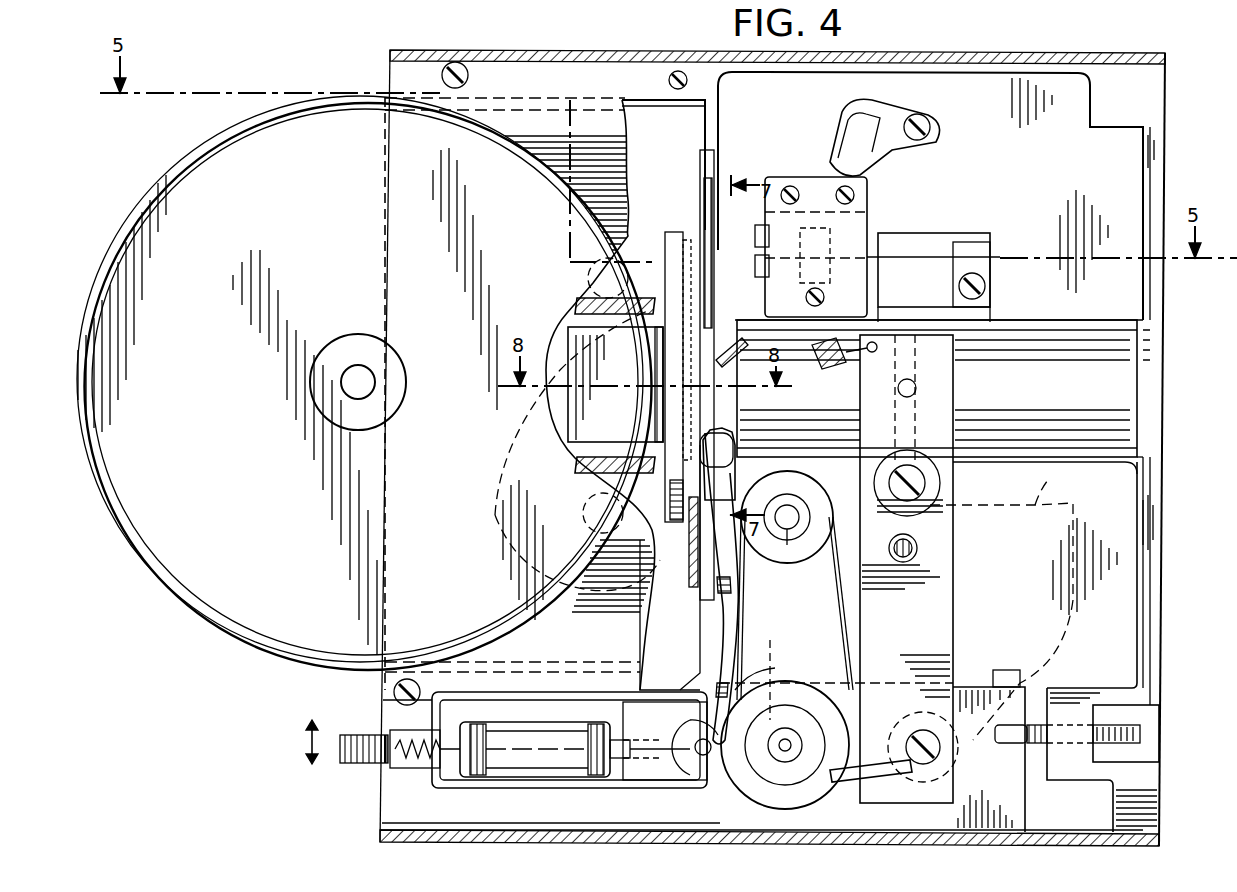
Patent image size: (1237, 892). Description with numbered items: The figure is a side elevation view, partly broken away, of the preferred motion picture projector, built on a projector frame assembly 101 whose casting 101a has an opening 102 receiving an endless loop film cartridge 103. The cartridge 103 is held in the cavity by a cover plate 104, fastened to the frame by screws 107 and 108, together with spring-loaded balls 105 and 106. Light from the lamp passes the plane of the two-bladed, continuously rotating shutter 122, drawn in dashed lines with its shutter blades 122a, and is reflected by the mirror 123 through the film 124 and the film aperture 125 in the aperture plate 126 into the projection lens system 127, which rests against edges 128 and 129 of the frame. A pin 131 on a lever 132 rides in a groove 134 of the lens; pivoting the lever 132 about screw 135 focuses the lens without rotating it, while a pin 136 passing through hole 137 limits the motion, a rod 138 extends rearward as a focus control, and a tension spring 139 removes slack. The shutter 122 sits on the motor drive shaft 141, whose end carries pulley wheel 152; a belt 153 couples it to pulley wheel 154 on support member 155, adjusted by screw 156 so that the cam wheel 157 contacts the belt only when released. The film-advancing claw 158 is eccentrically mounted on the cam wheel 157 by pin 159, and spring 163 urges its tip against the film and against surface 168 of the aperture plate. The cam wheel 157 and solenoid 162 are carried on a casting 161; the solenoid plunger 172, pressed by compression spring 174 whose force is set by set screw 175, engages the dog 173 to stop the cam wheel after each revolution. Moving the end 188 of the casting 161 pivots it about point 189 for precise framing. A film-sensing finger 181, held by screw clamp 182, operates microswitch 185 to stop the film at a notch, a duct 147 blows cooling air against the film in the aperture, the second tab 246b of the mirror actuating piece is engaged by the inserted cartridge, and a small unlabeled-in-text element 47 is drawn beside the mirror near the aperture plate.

The projector frame assembly 101 is at (1166, 160).
The casting 101a is at (1160, 535).
The opening 102 is at (640, 108).
The film cartridge 103 is at (140, 542).
The cover plate 104 is at (625, 622).
The spring-loaded ball 105 is at (586, 272).
The spring-loaded ball 106 is at (590, 505).
The screw 107 is at (457, 62).
The screw 108 is at (394, 692).
The continuously rotating shutter 122 is at (760, 628).
The shutter blades 122a is at (468, 515).
The mirror 123 is at (578, 345).
The film 124 is at (680, 425).
The film aperture 125 is at (690, 390).
The aperture plate 126 is at (685, 300).
The projection lens system 127 is at (1115, 395).
The edge of frame 128 is at (1152, 345).
The edge of frame 129 is at (1140, 456).
The pin 131 is at (918, 380).
The lever 132 is at (935, 633).
The groove 134 is at (900, 320).
The screw 135 is at (928, 486).
The pin 136 is at (912, 554).
The hole 137 is at (912, 542).
The rod 138 is at (880, 750).
The tension spring 139 is at (843, 362).
The drive shaft 141 is at (787, 542).
The duct 147 is at (856, 160).
The pulley wheel 152 is at (800, 492).
The belt 153 is at (838, 603).
The pulley wheel 154 is at (782, 692).
The support member 155 is at (1013, 808).
The screw 156 is at (1137, 745).
The cam wheel 157 is at (688, 770).
The film-advancing claw 158 is at (774, 666).
The pin 159 is at (708, 760).
The casting 161 is at (516, 783).
The solenoid 162 is at (538, 745).
The spring 163 is at (738, 435).
The surface of aperture plate 168 is at (683, 487).
The solenoid plunger 172 is at (442, 742).
The dog 173 is at (660, 735).
The compression spring 174 is at (406, 768).
The set screw 175 is at (338, 752).
The film-sensing finger 181 is at (900, 255).
The screw clamp 182 is at (970, 257).
The microswitch 185 is at (816, 247).
The end of casting 188 is at (362, 768).
The point 189 is at (602, 778).
The second tab 246b is at (760, 230).
The pin 47 is at (718, 352).